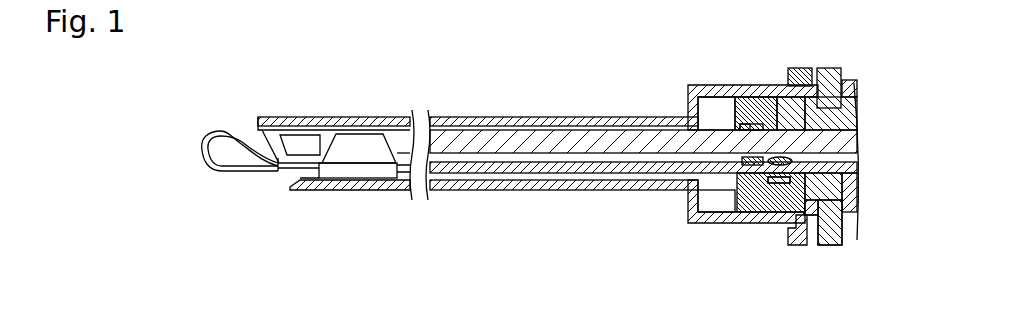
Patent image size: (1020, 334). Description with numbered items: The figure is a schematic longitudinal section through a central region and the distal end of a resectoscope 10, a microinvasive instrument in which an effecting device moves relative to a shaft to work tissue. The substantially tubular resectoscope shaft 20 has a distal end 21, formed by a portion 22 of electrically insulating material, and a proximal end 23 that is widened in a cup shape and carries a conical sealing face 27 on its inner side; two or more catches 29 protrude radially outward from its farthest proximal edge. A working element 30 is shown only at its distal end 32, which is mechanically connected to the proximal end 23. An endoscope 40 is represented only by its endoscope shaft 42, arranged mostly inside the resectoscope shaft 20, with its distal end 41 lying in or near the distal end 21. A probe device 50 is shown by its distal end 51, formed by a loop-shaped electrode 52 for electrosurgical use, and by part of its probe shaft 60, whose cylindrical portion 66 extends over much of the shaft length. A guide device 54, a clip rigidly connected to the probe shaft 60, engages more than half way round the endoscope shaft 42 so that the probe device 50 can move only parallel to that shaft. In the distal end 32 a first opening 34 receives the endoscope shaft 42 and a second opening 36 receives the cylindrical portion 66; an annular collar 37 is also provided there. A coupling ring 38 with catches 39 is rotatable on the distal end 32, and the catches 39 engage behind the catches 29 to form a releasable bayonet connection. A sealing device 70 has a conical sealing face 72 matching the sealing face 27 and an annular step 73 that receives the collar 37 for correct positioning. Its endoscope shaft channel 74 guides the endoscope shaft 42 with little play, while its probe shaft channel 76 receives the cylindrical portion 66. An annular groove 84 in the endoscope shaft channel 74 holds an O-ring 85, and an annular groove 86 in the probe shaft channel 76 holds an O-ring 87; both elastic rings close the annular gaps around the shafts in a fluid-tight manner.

The resectoscope 10 is at (416, 43).
The resectoscope shaft 20 is at (535, 117).
The distal end 21 is at (256, 118).
The portion 22 is at (289, 137).
The distal end 41 is at (295, 126).
The guide device 54 is at (387, 158).
The distal end 51 is at (202, 153).
The electrode 52 is at (240, 177).
The probe device 50 is at (305, 175).
The probe shaft 60 is at (557, 187).
The cylindrical portion 66 is at (494, 224).
The endoscope 40 is at (478, 150).
The endoscope shaft 42 is at (627, 199).
The working element 30 is at (850, 122).
The endoscope shaft channel 74 is at (743, 138).
The probe shaft channel 76 is at (743, 173).
The conical sealing face 27 is at (735, 102).
The proximal end 23 is at (740, 97).
The annular groove 84 is at (772, 127).
The O-ring 85 is at (757, 125).
The catches 39 is at (800, 80).
The catches 29 is at (818, 78).
The coupling ring 38 is at (848, 88).
The O-ring 87 is at (762, 165).
The first opening 34 is at (852, 163).
The sealing device 70 is at (768, 213).
The conical sealing face 72 is at (790, 180).
The second opening 36 is at (853, 192).
The distal end 32 is at (853, 203).
The annular groove 86 is at (832, 222).
The annular collar 37 is at (808, 214).
The annular step 73 is at (800, 216).